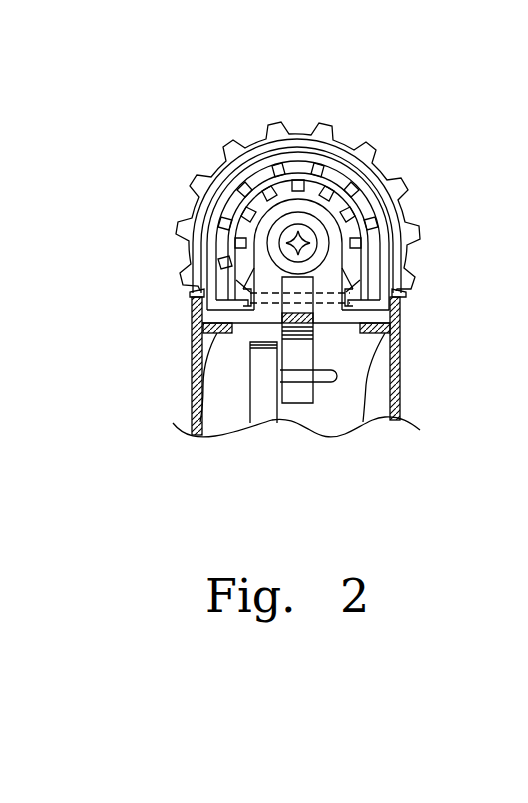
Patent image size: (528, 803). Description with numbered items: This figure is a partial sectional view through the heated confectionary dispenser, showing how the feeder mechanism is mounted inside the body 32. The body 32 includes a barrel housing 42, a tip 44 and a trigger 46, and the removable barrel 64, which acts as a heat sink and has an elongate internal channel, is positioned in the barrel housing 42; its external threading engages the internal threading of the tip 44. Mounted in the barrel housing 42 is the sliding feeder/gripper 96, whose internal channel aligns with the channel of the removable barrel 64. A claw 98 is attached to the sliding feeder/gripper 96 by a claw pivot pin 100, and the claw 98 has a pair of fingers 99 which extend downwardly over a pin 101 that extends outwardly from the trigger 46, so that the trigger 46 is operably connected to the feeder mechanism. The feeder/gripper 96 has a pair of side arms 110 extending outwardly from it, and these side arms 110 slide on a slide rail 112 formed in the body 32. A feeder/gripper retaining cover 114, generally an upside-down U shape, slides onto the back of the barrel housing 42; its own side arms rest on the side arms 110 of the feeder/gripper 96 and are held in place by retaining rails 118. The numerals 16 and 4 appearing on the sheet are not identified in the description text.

The barrel housing 42 is at (234, 142).
The tip 44 is at (210, 189).
The channel member 16 is at (196, 300).
The feeder/gripper retaining cover 114 is at (368, 208).
The retaining rails 118 is at (210, 272).
The removable barrel 64 is at (278, 172).
The sliding feeder/gripper 96 is at (297, 205).
The claw pivot pin 100 is at (332, 283).
The side arms 110 is at (205, 333).
The slide rail 112 is at (193, 387).
The body 32 is at (402, 347).
The trigger 46 is at (223, 432).
The claw 98 is at (302, 407).
The fingers 99 is at (290, 396).
The pin 101 is at (337, 377).
The device 4 is at (514, 154).